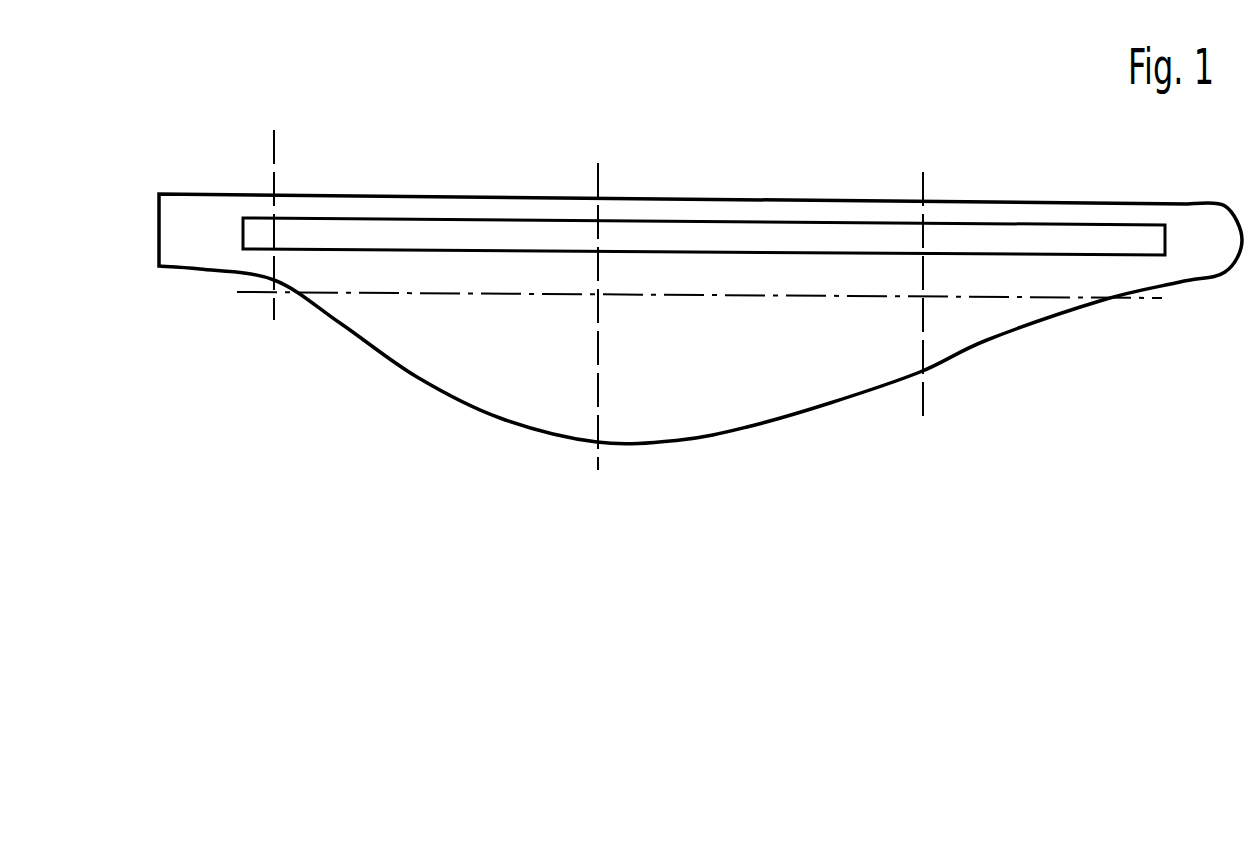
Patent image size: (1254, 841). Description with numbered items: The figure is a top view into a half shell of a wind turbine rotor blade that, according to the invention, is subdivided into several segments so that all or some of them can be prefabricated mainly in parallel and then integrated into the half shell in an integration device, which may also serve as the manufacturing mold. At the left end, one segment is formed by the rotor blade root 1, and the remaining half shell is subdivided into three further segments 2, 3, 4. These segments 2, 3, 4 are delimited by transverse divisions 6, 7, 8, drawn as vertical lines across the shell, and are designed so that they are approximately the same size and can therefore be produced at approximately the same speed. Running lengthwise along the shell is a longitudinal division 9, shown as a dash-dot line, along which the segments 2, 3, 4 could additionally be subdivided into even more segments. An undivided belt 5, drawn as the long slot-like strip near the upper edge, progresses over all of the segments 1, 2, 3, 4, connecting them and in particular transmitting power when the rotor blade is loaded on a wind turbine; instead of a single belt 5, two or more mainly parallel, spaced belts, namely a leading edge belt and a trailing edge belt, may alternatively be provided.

The rotor blade root 1 is at (203, 213).
The segment 2 is at (427, 363).
The segment 3 is at (740, 405).
The segment 4 is at (982, 322).
The undivided belt 5 is at (692, 242).
The transverse division 6 is at (276, 158).
The transverse division 7 is at (600, 180).
The transverse division 8 is at (925, 183).
The longitudinal division 9 is at (1142, 300).